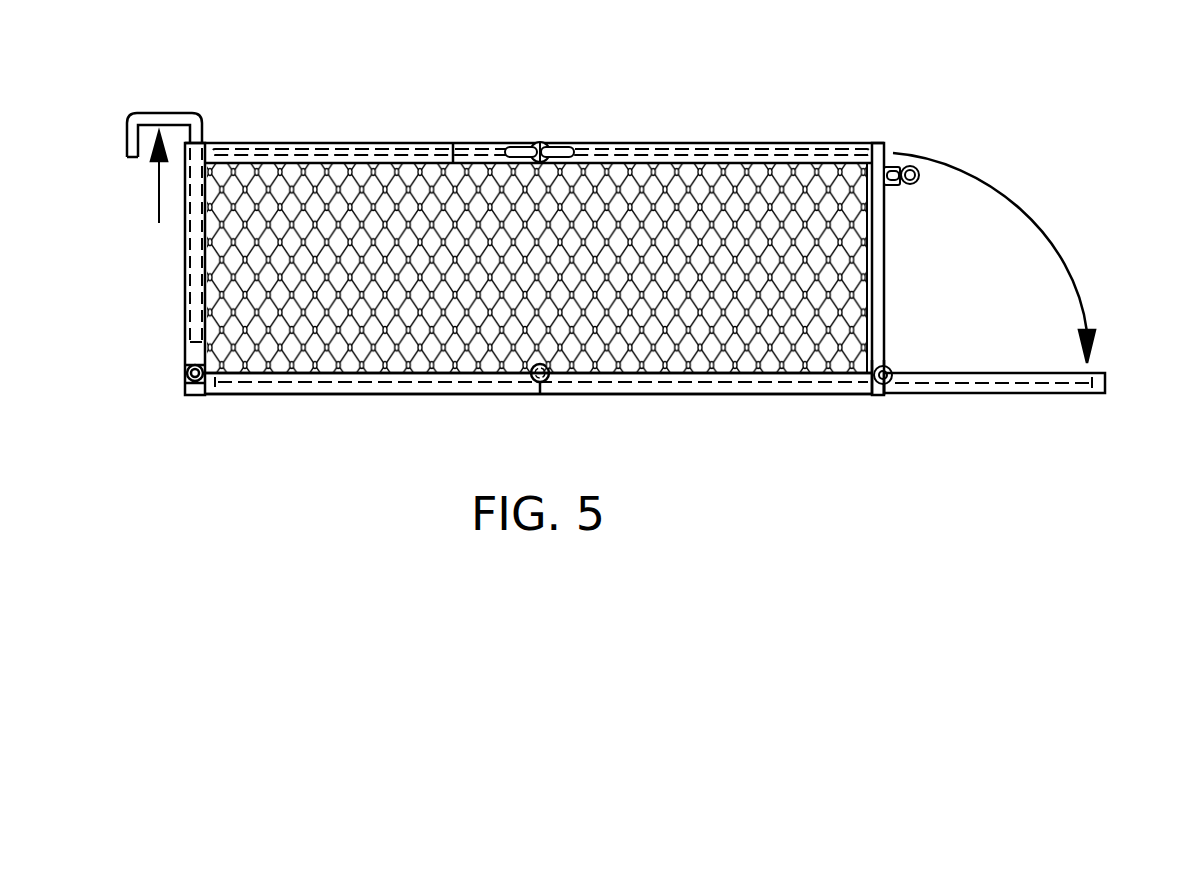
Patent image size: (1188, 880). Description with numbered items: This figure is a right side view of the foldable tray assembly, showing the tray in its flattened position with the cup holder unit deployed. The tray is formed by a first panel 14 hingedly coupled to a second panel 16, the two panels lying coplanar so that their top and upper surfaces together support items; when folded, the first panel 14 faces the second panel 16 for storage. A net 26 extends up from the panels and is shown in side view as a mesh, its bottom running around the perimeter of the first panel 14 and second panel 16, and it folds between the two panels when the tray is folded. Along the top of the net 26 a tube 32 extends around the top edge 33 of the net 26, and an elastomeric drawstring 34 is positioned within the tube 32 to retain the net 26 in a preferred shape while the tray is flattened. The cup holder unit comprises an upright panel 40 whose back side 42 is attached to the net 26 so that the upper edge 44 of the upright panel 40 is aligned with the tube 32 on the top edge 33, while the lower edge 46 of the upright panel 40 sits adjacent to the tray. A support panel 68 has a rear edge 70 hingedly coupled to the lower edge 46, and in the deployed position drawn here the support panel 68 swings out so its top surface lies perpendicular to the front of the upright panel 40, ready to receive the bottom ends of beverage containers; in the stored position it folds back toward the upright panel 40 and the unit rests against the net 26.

The first panel 14 is at (397, 394).
The second panel 16 is at (736, 394).
The net 26 is at (686, 190).
The tube 32 is at (384, 143).
The top edge 33 is at (453, 143).
The elastomeric drawstring 34 is at (563, 148).
The upright panel 40 is at (885, 151).
The back side 42 is at (872, 206).
The upper edge 44 is at (878, 143).
The lower edge 46 is at (879, 372).
The support panel 68 is at (1105, 384).
The rear edge 70 is at (872, 387).